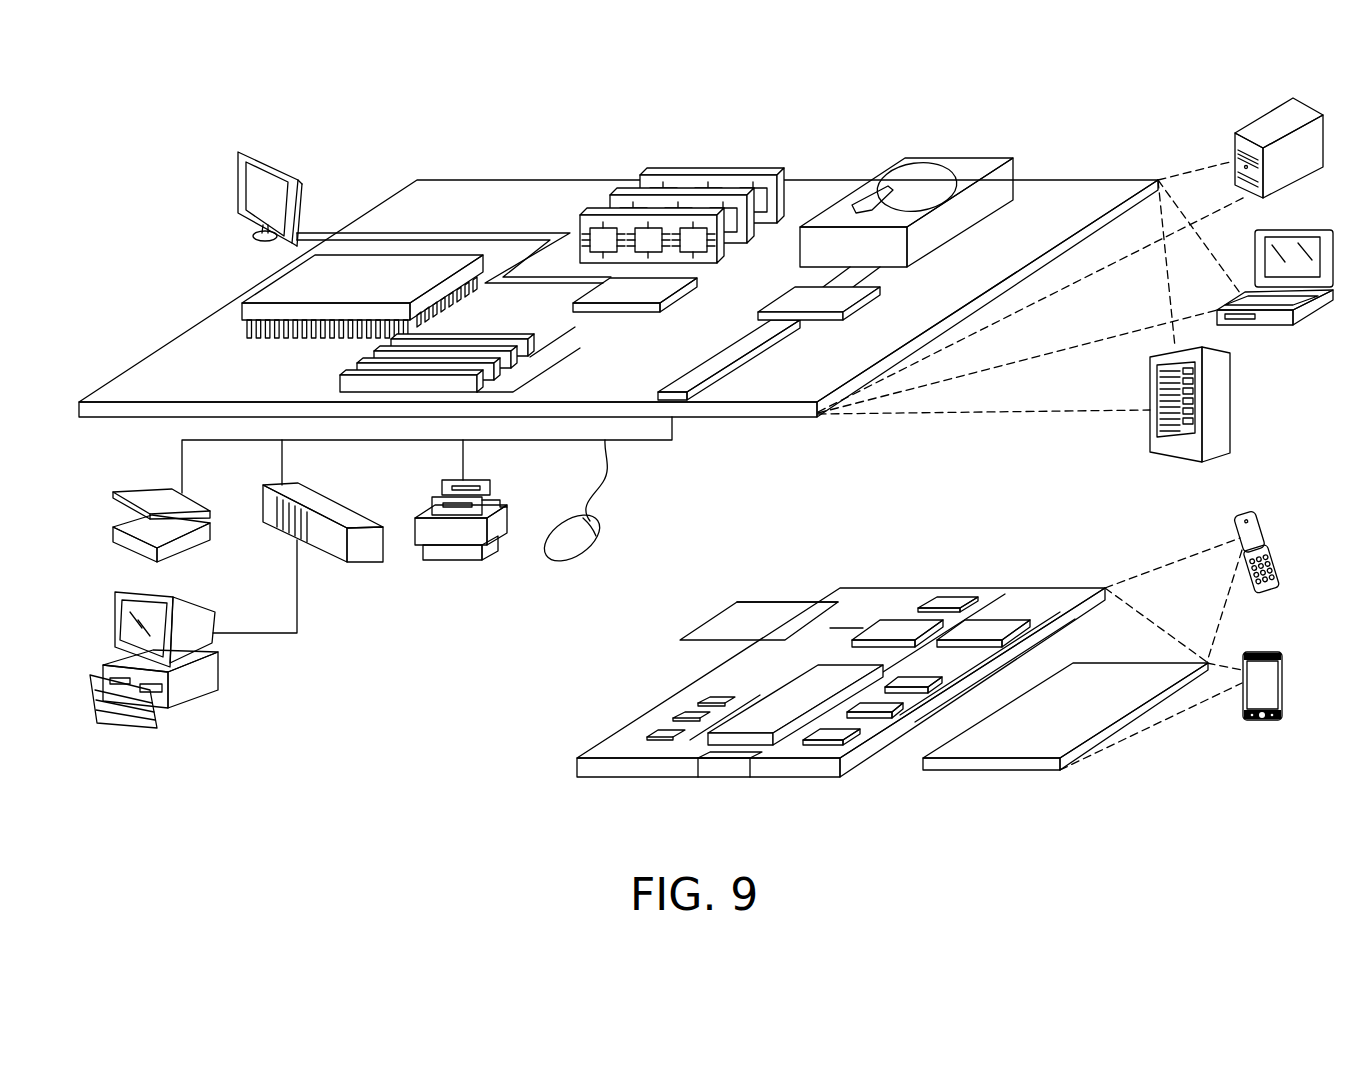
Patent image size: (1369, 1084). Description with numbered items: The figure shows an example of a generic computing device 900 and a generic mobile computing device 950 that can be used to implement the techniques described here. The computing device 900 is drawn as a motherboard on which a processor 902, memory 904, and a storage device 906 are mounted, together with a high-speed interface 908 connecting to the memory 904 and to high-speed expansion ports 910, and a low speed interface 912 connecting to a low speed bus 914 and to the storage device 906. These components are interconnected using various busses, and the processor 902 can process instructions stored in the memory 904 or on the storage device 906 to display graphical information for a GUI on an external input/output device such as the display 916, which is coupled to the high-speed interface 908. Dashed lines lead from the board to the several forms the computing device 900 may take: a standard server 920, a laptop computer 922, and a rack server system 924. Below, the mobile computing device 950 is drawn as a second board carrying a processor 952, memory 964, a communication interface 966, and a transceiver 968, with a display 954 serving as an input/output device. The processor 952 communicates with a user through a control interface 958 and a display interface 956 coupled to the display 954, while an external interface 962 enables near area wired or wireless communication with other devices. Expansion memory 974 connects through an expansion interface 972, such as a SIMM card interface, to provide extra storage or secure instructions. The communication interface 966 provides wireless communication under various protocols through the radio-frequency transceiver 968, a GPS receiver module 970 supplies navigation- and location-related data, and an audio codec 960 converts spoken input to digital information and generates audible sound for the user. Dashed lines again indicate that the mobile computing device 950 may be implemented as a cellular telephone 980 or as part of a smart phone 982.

The computing device 900 is at (370, 127).
The processor 902 is at (267, 287).
The memory 904 is at (717, 172).
The storage device 906 is at (947, 155).
The high-speed interface 908 is at (647, 288).
The high-speed expansion ports 910 is at (363, 360).
The low speed interface 912 is at (792, 293).
The low speed bus 914 is at (680, 387).
The display 916 is at (242, 150).
The standard server 920 is at (1255, 125).
The laptop computer 922 is at (1310, 227).
The rack server system 924 is at (1230, 403).
The mobile computing device 950 is at (531, 786).
The processor 952 is at (765, 710).
The display 954 is at (1105, 677).
The display interface 956 is at (843, 736).
The control interface 958 is at (882, 708).
The audio codec 960 is at (920, 678).
The external interface 962 is at (724, 763).
The memory 964 is at (680, 717).
The communication interface 966 is at (898, 622).
The transceiver 968 is at (990, 623).
The GPS receiver module 970 is at (950, 597).
The expansion interface 972 is at (823, 600).
The expansion memory 974 is at (740, 600).
The cellular telephone 980 is at (1252, 512).
The smart phone 982 is at (1255, 652).